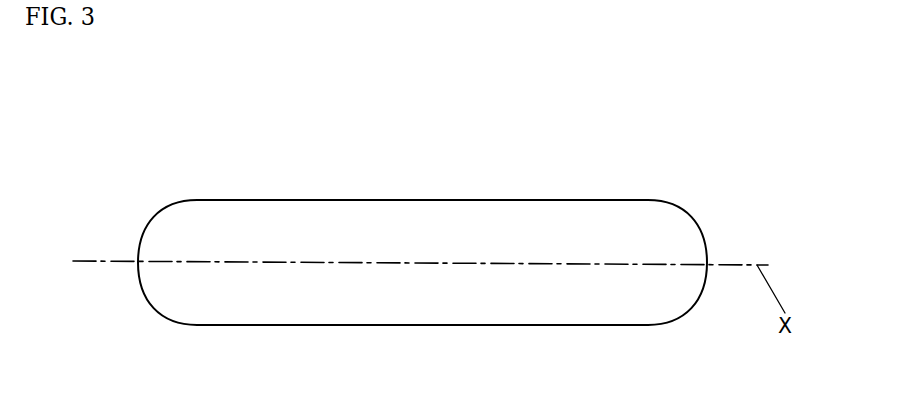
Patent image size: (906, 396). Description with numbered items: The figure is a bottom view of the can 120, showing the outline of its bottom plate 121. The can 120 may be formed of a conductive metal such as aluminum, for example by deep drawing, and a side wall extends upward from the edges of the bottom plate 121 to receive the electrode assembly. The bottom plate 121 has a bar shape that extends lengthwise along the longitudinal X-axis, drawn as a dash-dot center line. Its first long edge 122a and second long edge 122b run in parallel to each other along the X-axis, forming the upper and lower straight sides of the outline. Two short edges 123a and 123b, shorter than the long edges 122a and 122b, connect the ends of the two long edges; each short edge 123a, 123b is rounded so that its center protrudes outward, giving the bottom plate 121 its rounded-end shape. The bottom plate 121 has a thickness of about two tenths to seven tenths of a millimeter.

The can 120 is at (104, 119).
The bottom plate 121 is at (565, 212).
The first long edge 122a is at (365, 199).
The second long edge 122b is at (363, 326).
The short edge 123a is at (692, 222).
The short edge 123b is at (155, 217).